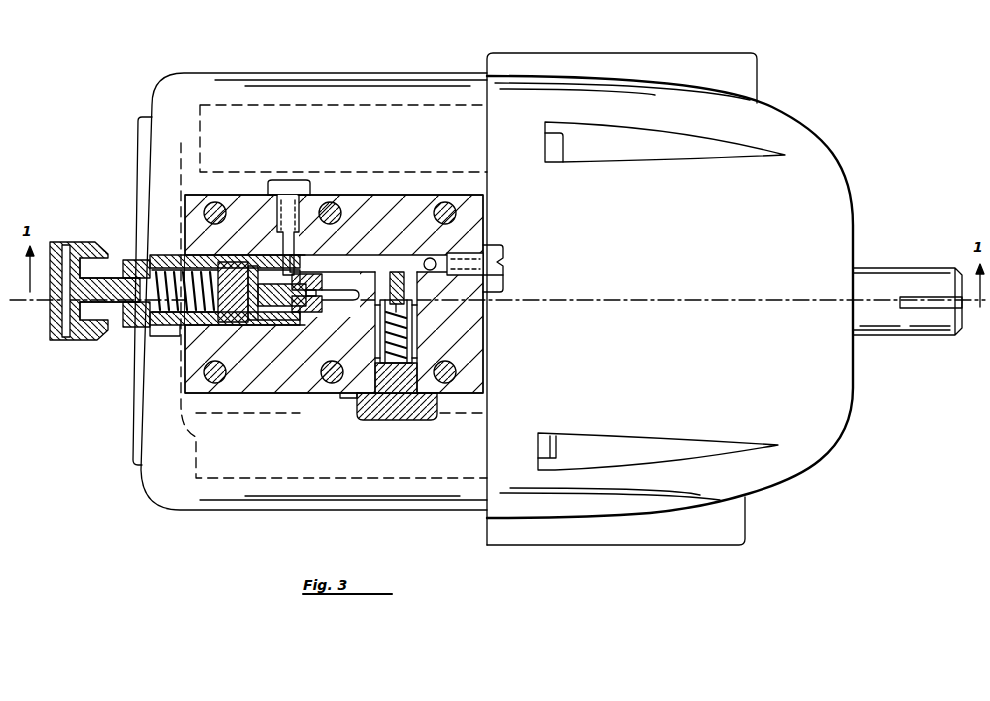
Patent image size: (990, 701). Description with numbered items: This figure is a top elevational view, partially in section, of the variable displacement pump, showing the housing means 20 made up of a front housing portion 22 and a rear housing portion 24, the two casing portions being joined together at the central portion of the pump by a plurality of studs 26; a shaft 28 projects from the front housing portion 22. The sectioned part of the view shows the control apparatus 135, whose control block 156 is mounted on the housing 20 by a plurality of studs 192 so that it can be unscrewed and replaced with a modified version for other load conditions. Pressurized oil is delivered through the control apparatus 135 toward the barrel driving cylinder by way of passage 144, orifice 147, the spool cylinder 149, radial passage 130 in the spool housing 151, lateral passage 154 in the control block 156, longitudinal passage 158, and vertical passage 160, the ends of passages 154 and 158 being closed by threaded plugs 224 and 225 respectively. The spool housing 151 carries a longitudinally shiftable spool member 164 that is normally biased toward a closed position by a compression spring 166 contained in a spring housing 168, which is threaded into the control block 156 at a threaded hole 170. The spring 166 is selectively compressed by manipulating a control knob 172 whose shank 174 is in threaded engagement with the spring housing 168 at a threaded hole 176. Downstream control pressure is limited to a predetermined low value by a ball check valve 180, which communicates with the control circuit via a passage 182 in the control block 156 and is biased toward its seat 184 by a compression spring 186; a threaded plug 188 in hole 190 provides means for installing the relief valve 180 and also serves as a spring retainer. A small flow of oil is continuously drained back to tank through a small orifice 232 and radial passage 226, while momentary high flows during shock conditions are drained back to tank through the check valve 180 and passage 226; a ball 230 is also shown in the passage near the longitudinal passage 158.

The housing means 20 is at (774, 52).
The front housing portion 22 is at (866, 180).
The rear housing portion 24 is at (144, 95).
The studs 26 is at (560, 432).
The shaft 28 is at (900, 272).
The radial passage 130 is at (300, 306).
The control apparatus 135 is at (375, 182).
The passage 144 is at (333, 303).
The orifice 147 is at (348, 254).
The spool cylinder 149 is at (296, 290).
The spool housing 151 is at (248, 322).
The lateral passage 154 is at (272, 248).
The control block 156 is at (266, 190).
The longitudinal passage 158 is at (456, 256).
The vertical passage 160 is at (497, 262).
The spool member 164 is at (222, 322).
The spring 166 is at (160, 326).
The spring housing 168 is at (158, 256).
The threaded hole 170 is at (195, 338).
The control knob 172 is at (45, 250).
The shank 174 is at (62, 300).
The threaded hole 176 is at (110, 320).
The ball check valve 180 is at (414, 330).
The passage 182 is at (404, 278).
The seat 184 is at (412, 312).
The compression spring 186 is at (416, 346).
The threaded plug 188 is at (380, 420).
The hole 190 is at (341, 399).
The studs 192 is at (212, 210).
The threaded plug 224 is at (290, 178).
The threaded plug 225 is at (506, 270).
The radial passage 226 is at (356, 386).
The ball 230 is at (426, 260).
The small orifice 232 is at (374, 338).